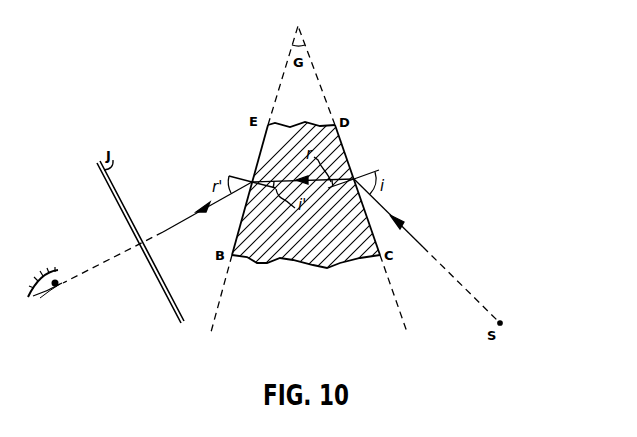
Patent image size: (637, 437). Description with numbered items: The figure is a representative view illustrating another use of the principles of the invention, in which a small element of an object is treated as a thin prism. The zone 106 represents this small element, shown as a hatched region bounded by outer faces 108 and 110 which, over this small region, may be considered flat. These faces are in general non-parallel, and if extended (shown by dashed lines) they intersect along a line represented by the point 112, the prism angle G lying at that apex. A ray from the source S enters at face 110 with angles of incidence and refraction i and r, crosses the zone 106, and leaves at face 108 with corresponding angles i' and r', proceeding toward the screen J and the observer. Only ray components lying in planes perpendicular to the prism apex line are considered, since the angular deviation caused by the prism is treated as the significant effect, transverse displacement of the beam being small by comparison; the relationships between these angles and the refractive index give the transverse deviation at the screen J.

The zone 106 is at (283, 256).
The outer face 108 is at (263, 153).
The outer face 110 is at (348, 161).
The point 112 is at (299, 27).